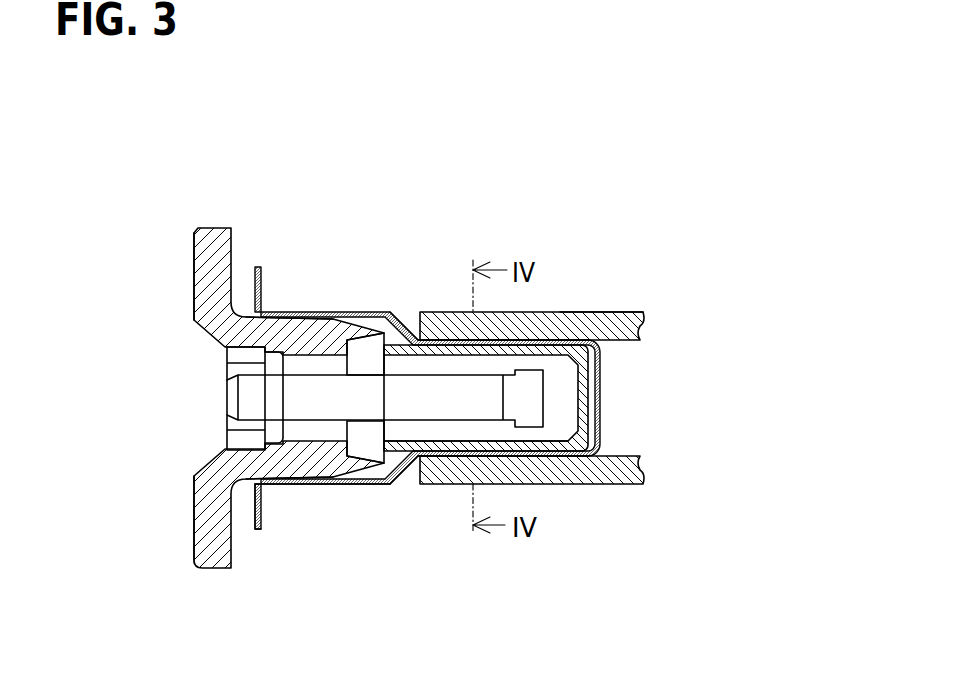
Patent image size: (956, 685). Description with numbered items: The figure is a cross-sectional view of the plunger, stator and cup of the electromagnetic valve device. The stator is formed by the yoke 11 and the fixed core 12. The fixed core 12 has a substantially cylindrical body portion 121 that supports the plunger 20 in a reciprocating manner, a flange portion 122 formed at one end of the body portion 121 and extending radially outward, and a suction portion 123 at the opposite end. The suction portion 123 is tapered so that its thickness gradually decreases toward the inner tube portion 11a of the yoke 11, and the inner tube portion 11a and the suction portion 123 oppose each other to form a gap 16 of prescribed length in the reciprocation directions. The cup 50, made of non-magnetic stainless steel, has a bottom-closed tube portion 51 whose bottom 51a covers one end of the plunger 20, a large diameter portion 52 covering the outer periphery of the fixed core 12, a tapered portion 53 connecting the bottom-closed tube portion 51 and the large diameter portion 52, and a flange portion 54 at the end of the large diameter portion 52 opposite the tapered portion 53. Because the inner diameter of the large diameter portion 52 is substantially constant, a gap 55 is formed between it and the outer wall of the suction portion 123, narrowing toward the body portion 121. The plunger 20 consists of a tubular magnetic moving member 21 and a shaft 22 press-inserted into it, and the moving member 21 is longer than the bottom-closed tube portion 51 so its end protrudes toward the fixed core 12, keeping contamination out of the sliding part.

The yoke 11 is at (590, 362).
The inner tube portion 11a is at (618, 313).
The fixed core 12 is at (232, 327).
The body portion 121 is at (302, 327).
The flange portion 122 is at (194, 258).
The suction portion 123 is at (375, 340).
The gap 16 is at (393, 333).
The plunger 20 is at (564, 497).
The moving member 21 is at (563, 451).
The shaft 22 is at (267, 398).
The cup 50 is at (491, 421).
The bottom-closed tube portion 51 is at (568, 340).
The bottom 51a is at (603, 420).
The large diameter portion 52 is at (322, 484).
The tapered portion 53 is at (405, 466).
The flange portion 54 is at (258, 529).
The gap 55 is at (377, 463).